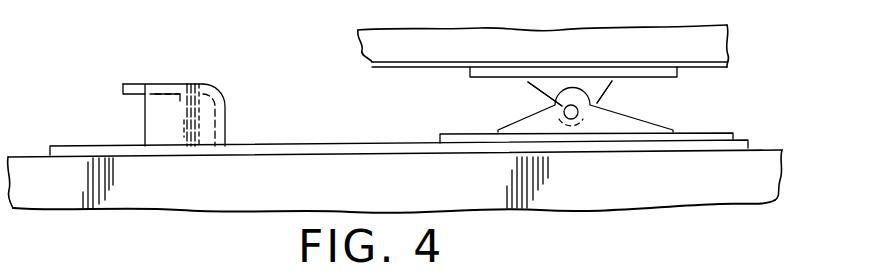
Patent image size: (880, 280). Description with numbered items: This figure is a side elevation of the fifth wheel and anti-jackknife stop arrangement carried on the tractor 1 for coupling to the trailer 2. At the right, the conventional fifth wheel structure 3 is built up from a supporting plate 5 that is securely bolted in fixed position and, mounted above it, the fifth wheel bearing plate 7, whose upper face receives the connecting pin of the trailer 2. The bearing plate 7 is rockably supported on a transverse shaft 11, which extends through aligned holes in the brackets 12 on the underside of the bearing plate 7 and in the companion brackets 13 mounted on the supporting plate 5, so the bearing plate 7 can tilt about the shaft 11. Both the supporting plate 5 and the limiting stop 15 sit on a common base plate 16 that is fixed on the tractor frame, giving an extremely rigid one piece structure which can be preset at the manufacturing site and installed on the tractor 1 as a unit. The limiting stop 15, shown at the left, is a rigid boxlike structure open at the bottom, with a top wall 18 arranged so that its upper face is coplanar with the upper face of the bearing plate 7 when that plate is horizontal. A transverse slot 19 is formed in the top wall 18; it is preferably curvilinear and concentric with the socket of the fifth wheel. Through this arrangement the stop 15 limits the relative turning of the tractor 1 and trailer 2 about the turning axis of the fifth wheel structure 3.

The tractor 1 is at (737, 182).
The trailer 2 is at (734, 43).
The fifth wheel structure 3 is at (517, 103).
The supporting plate 5 is at (733, 133).
The fifth wheel bearing plate 7 is at (668, 74).
The transverse shaft 11 is at (575, 118).
The brackets 12 is at (588, 85).
The companion brackets 13 is at (638, 122).
The limiting stop 15 is at (228, 84).
The base plate 16 is at (128, 150).
The top wall 18 is at (123, 88).
The transverse slot 19 is at (156, 85).